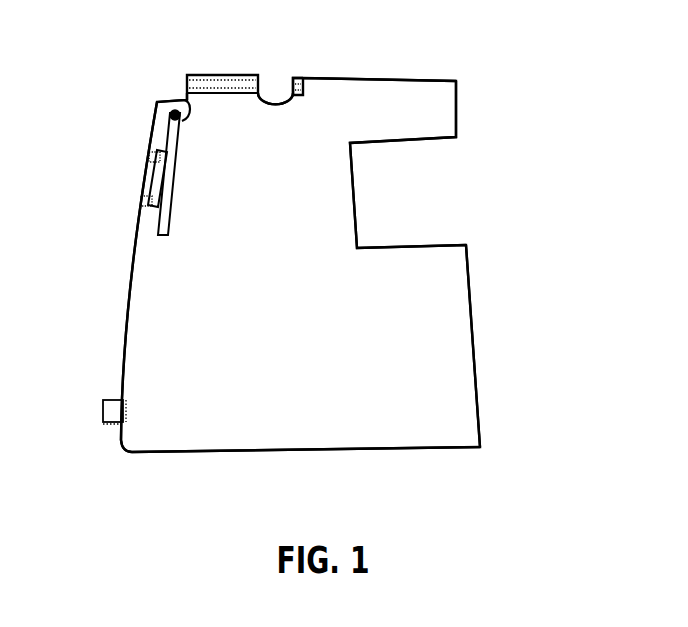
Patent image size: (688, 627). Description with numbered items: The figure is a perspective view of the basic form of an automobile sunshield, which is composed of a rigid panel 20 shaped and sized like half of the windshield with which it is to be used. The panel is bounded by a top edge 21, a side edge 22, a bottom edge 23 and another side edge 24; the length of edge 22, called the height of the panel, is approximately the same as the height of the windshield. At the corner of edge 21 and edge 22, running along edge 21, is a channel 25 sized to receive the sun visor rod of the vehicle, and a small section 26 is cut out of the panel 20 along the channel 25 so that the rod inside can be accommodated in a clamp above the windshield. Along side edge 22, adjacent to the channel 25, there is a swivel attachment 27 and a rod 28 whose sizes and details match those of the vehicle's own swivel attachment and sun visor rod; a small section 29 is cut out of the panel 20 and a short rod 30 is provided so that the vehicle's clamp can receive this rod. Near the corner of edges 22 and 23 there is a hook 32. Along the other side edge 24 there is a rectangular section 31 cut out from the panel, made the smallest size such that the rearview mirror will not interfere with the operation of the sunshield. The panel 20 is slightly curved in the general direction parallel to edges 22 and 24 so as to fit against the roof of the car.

The rigid panel 20 is at (283, 313).
The edge 21 is at (318, 77).
The edge 22 is at (125, 290).
The edge 23 is at (320, 453).
The side edge 24 is at (470, 283).
The channel 25 is at (230, 82).
The small section 26 is at (272, 87).
The swivel attachment 27 is at (157, 103).
The rod 28 is at (172, 138).
The small section 29 is at (152, 172).
The short rod 30 is at (143, 193).
The rectangular section 31 is at (400, 192).
The hook 32 is at (110, 413).